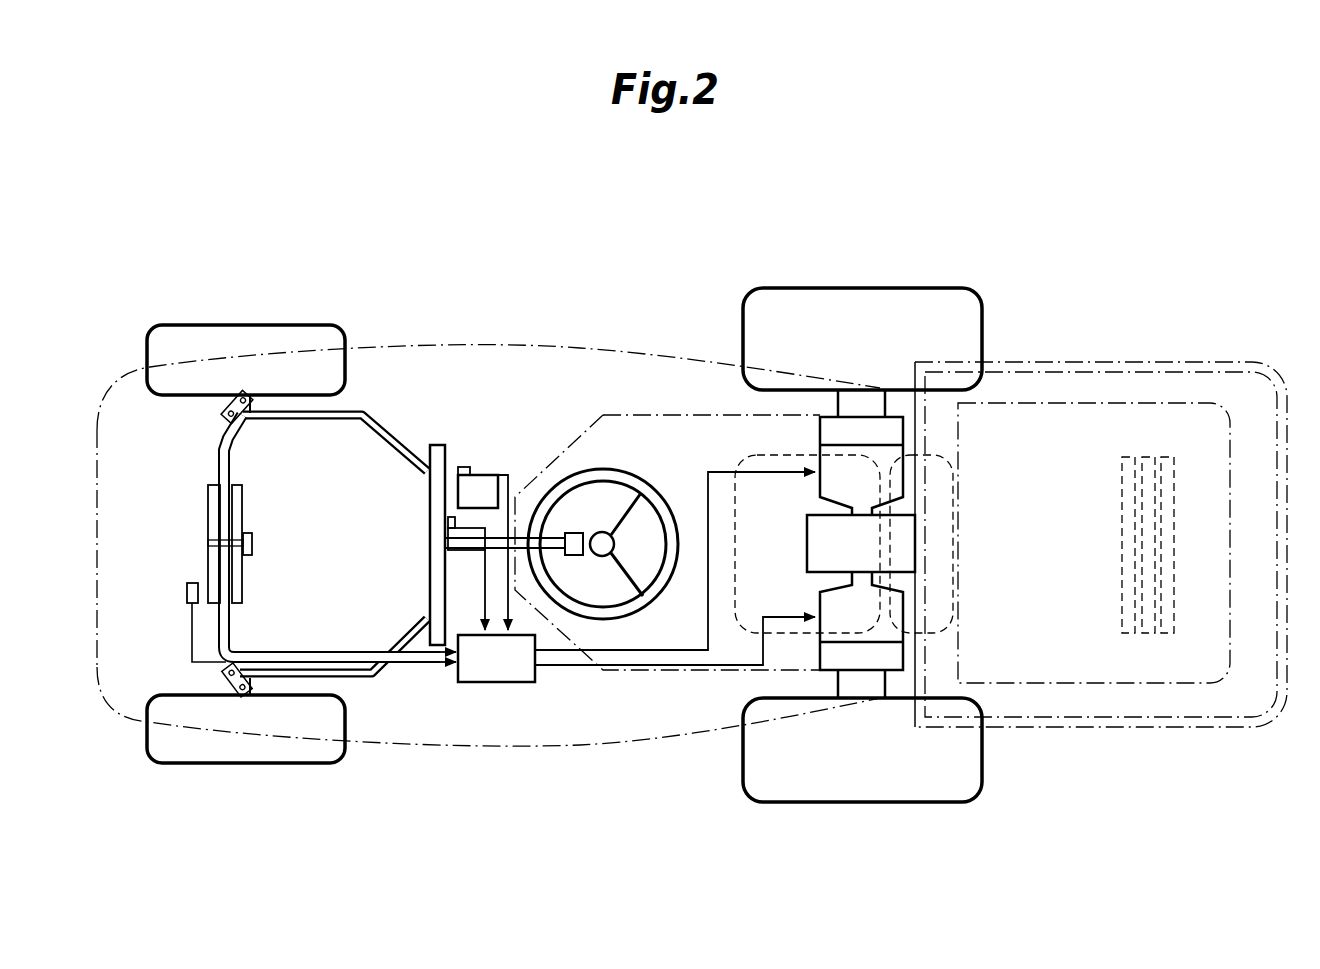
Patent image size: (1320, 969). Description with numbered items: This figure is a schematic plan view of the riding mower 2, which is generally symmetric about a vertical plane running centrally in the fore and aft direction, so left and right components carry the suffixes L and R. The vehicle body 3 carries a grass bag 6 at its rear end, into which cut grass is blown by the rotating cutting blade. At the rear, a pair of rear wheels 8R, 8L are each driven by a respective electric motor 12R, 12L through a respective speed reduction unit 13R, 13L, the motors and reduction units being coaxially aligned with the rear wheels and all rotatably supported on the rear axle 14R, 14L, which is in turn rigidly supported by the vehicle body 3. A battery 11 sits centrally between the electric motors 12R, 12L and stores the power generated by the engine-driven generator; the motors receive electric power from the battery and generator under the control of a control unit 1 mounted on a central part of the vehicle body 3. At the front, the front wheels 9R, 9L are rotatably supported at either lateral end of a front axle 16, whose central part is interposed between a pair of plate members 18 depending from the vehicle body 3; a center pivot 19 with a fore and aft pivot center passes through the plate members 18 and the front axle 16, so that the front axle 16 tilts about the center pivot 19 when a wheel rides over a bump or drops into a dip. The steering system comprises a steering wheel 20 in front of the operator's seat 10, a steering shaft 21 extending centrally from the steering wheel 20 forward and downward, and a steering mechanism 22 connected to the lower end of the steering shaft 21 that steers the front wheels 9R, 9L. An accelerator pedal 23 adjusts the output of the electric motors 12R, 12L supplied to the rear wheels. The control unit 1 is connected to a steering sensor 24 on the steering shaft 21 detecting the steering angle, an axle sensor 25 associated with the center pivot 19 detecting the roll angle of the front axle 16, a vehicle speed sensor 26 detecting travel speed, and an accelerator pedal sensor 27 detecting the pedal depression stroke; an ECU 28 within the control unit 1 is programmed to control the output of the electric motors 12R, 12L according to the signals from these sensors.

The control unit 1 is at (456, 685).
The riding mower 2 is at (505, 298).
The vehicle body 3 is at (109, 377).
The grass bag 6 is at (1232, 362).
The right rear wheel 8R is at (905, 290).
The left rear wheel 8L is at (887, 805).
The right front wheel 9R is at (280, 325).
The left front wheel 9L is at (280, 768).
The operator's seat 10 is at (745, 458).
The battery 11 is at (915, 543).
The right electric motor 12R is at (903, 485).
The left electric motor 12L is at (905, 623).
The right speed reduction unit 13R is at (903, 440).
The left speed reduction unit 13L is at (907, 655).
The right rear axle 14R is at (836, 400).
The left rear axle 14L is at (837, 680).
The front axle 16 is at (223, 472).
The plate members 18 is at (243, 510).
The center pivot 19 is at (210, 550).
The steering wheel 20 is at (612, 462).
The steering shaft 21 is at (526, 490).
The steering mechanism 22 is at (393, 427).
The accelerator pedal 23 is at (490, 474).
The steering sensor 24 is at (447, 524).
The axle sensor 25 is at (253, 544).
The vehicle speed sensor 26 is at (186, 594).
The accelerator pedal sensor 27 is at (465, 466).
The ECU 28 is at (525, 688).